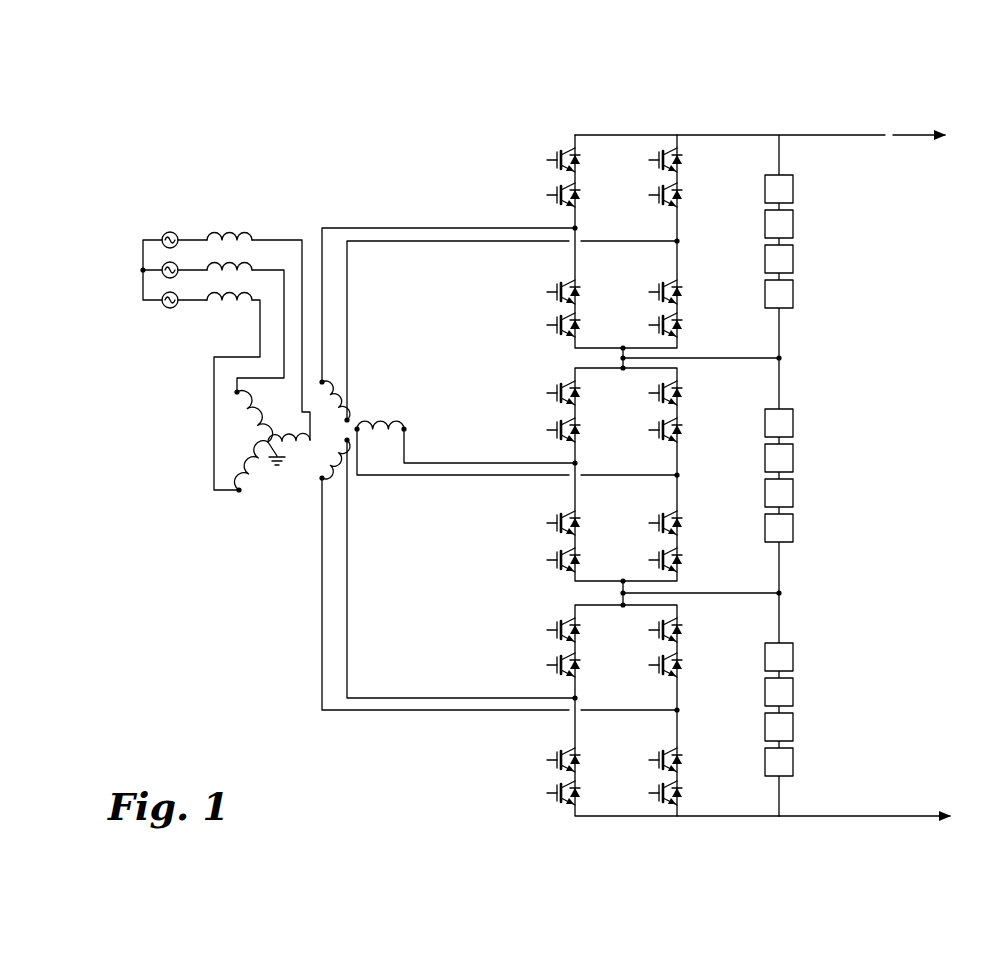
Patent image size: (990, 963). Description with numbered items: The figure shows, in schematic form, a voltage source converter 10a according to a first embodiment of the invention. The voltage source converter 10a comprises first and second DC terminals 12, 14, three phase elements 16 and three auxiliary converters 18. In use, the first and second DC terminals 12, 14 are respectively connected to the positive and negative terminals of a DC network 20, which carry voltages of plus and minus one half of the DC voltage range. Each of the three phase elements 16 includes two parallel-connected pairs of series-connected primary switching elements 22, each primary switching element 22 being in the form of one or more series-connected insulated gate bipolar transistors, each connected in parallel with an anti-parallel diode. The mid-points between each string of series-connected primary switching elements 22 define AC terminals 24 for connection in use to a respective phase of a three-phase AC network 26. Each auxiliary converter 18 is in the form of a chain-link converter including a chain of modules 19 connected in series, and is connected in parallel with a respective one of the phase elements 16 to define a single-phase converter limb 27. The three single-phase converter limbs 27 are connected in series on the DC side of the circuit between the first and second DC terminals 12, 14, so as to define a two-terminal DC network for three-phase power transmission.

The voltage source converter 10a is at (207, 553).
The first DC terminal 12 is at (779, 133).
The second DC terminal 14 is at (779, 818).
The phase element 16 is at (508, 188).
The auxiliary converter 18 is at (794, 475).
The module 19 is at (773, 293).
The DC network 20 is at (881, 477).
The primary switching element 22 is at (556, 190).
The AC terminal 24 is at (575, 228).
The three-phase AC network 26 is at (170, 232).
The single-phase converter limb 27 is at (833, 475).